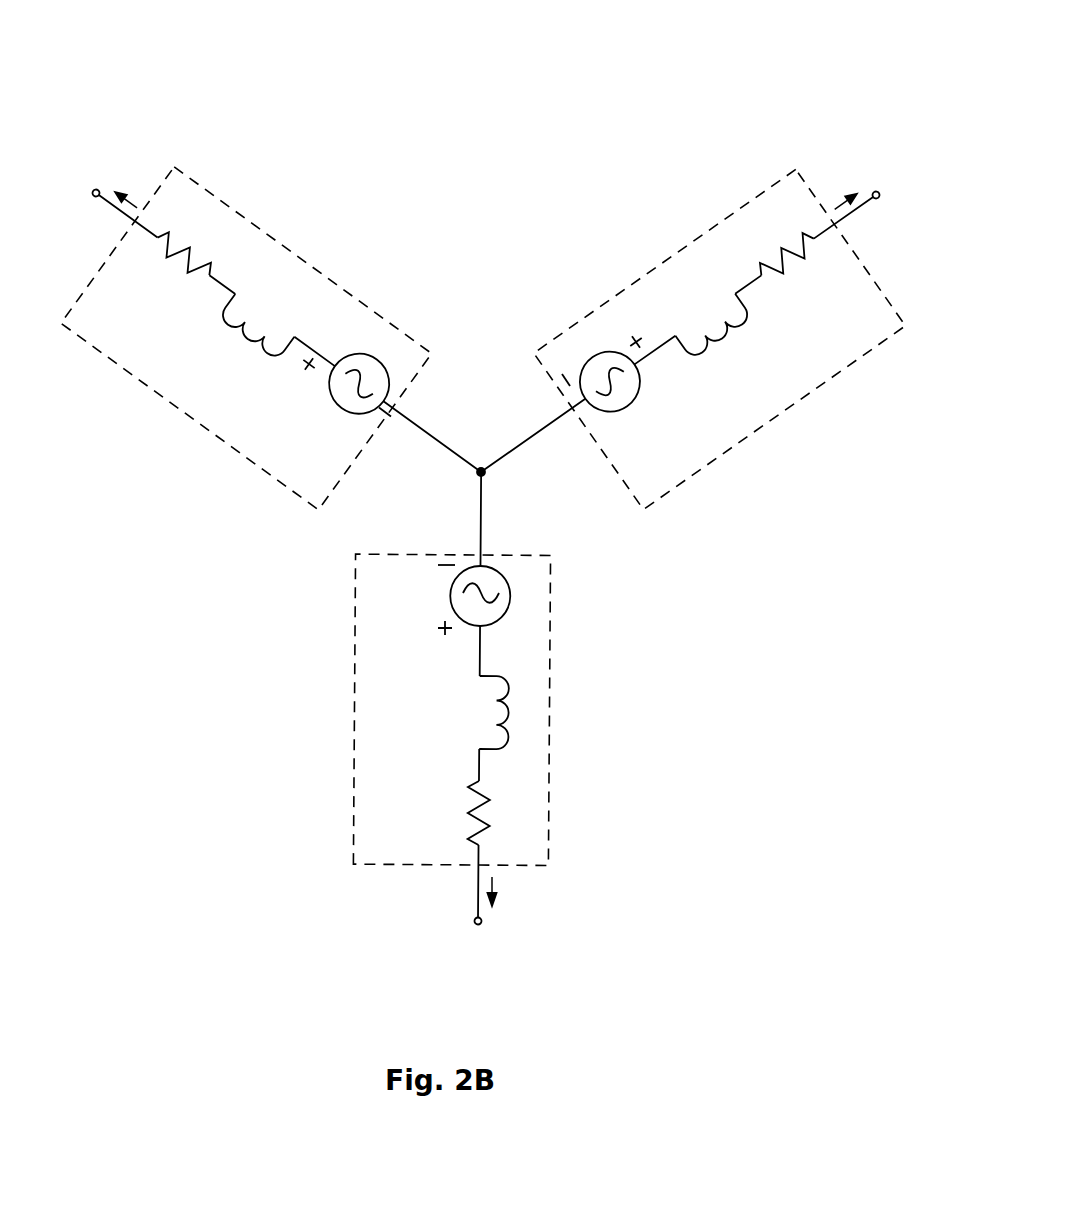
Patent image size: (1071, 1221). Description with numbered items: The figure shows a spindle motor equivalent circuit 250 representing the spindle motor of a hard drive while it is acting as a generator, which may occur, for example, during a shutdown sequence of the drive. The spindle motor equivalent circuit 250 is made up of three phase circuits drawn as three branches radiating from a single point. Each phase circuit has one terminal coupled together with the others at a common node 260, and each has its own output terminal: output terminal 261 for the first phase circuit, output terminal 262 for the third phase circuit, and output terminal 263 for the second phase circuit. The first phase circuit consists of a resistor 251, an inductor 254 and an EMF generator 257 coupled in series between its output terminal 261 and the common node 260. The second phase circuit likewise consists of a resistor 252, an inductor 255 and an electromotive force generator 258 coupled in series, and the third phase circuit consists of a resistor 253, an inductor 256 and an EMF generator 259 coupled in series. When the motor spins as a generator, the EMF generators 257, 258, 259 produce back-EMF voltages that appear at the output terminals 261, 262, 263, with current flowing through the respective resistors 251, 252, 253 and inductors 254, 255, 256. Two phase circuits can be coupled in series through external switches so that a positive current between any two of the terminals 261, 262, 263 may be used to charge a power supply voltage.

The spindle motor equivalent circuit 250 is at (776, 42).
The resistor 251 is at (170, 268).
The resistor 252 is at (800, 277).
The resistor 253 is at (453, 800).
The inductor 254 is at (252, 343).
The inductor 255 is at (720, 351).
The inductor 256 is at (478, 697).
The EMF generator 257 is at (327, 393).
The EMF generator 258 is at (638, 395).
The EMF generator 259 is at (505, 614).
The common node 260 is at (488, 478).
The output terminal 261 is at (92, 194).
The output terminal 262 is at (475, 921).
The output terminal 263 is at (878, 199).